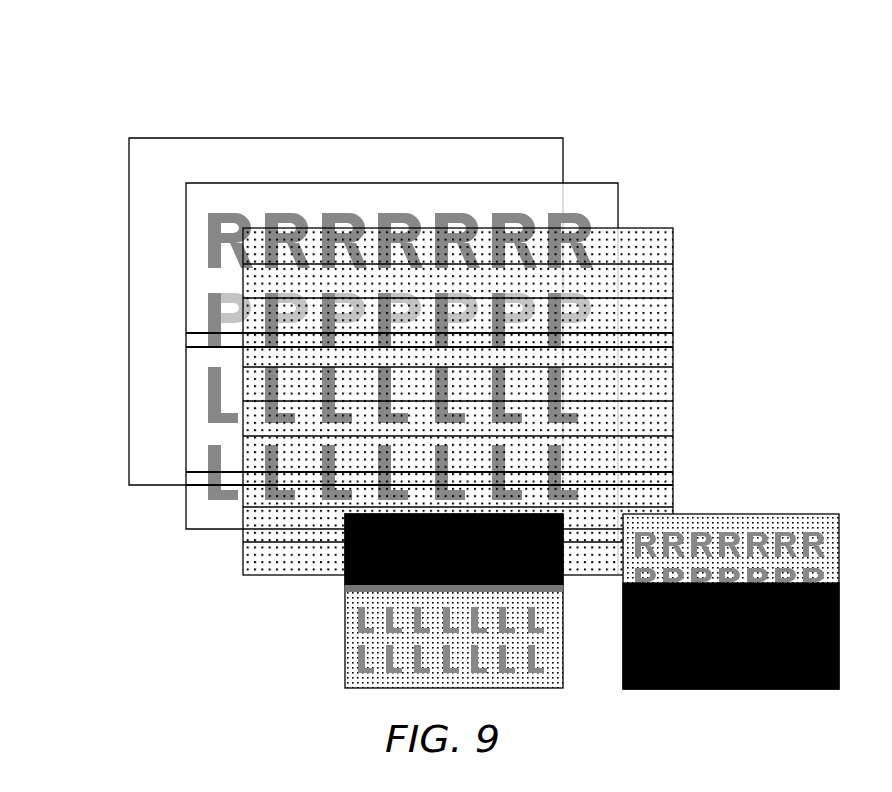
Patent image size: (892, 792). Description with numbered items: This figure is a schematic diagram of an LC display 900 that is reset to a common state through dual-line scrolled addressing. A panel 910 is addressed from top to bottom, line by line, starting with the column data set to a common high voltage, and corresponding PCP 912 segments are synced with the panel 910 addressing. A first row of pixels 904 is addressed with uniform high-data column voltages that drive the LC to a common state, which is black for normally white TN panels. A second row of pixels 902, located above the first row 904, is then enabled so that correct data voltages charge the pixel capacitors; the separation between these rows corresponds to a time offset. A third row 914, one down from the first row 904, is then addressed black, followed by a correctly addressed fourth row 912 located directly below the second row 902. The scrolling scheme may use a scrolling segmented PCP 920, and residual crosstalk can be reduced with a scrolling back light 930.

The LC display 900 is at (325, 85).
The second row of pixels 902 is at (200, 333).
The first row of pixels 904 is at (196, 472).
The panel 910 is at (618, 205).
The fourth row 912 is at (196, 347).
The third row 914 is at (203, 486).
The scrolling segmented PCP 920 is at (673, 277).
The scrolling back light 930 is at (430, 138).